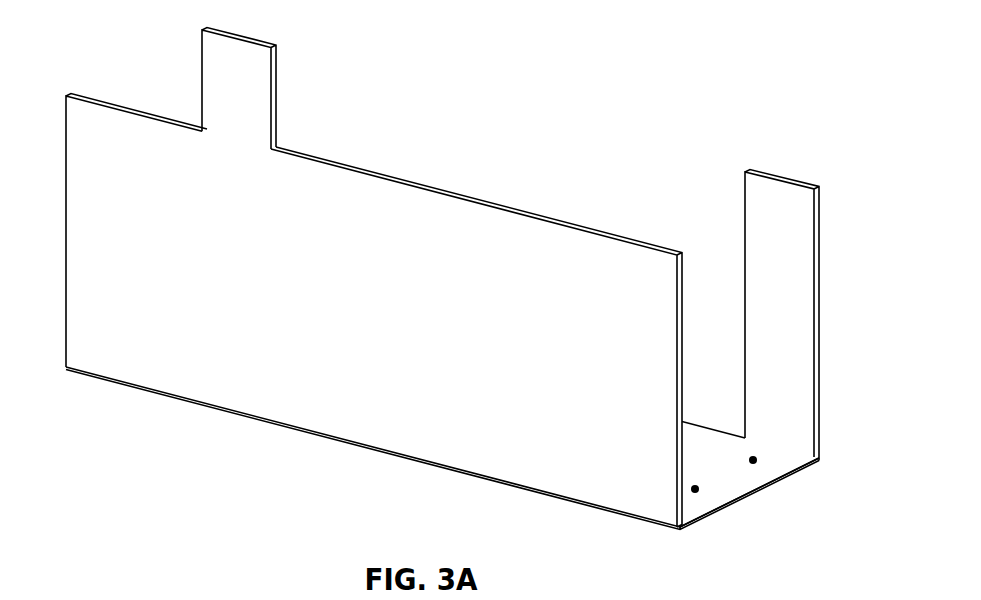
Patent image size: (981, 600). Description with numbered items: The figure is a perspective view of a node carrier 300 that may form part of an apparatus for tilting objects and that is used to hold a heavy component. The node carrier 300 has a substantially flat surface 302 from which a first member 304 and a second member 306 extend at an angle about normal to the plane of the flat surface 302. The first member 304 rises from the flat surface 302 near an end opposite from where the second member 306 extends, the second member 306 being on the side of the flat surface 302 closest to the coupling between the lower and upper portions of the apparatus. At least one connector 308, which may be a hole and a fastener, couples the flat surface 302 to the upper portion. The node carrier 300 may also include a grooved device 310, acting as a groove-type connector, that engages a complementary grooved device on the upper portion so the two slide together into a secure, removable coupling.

The node carrier 300 is at (464, 306).
The flat surface 302 is at (712, 448).
The first member 304 is at (332, 332).
The second member 306 is at (218, 88).
The connector 308 is at (695, 489).
The grooved device 310 is at (694, 529).